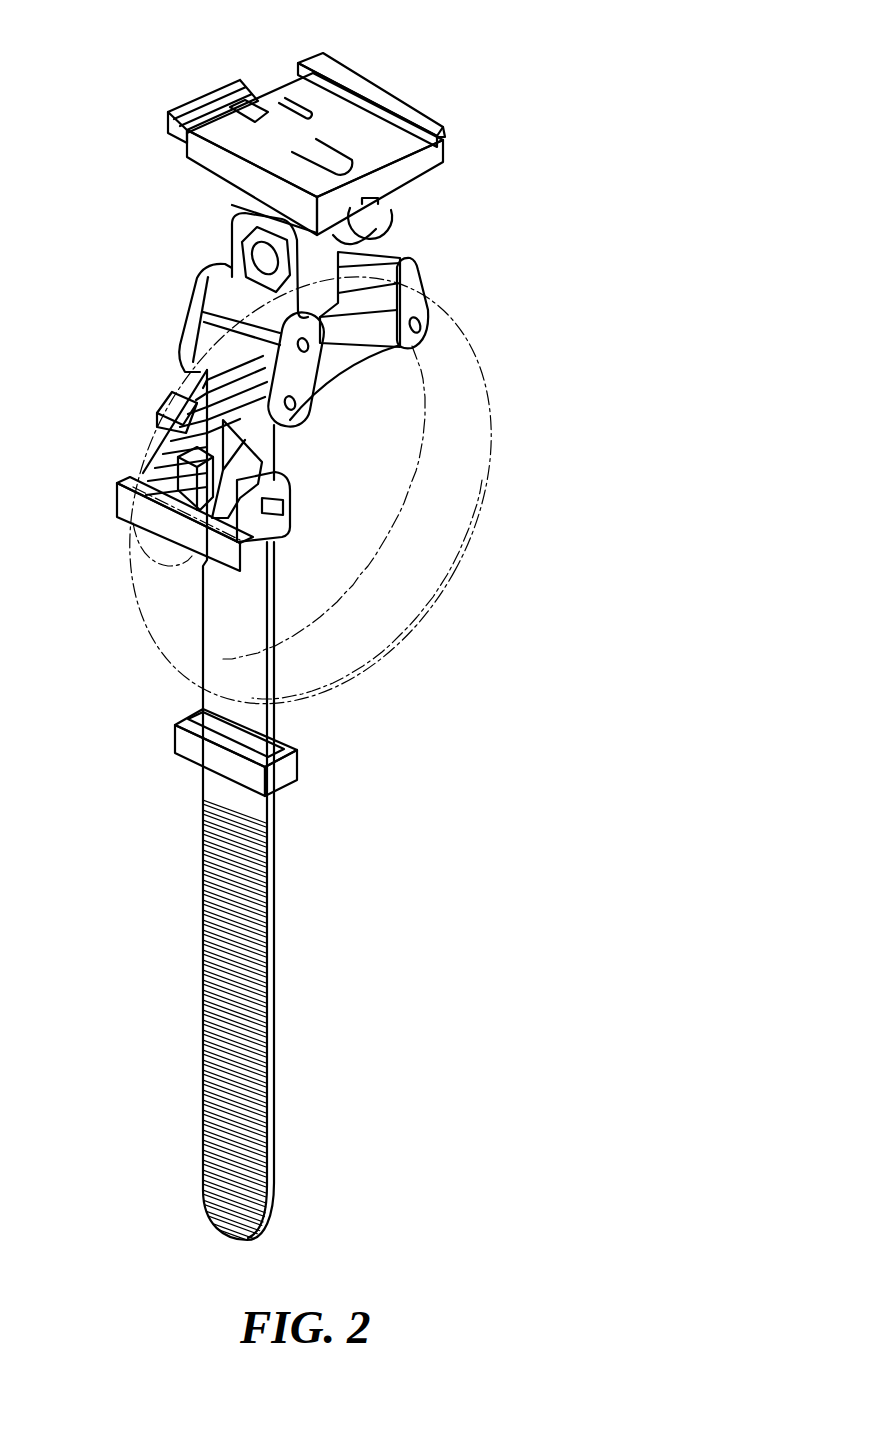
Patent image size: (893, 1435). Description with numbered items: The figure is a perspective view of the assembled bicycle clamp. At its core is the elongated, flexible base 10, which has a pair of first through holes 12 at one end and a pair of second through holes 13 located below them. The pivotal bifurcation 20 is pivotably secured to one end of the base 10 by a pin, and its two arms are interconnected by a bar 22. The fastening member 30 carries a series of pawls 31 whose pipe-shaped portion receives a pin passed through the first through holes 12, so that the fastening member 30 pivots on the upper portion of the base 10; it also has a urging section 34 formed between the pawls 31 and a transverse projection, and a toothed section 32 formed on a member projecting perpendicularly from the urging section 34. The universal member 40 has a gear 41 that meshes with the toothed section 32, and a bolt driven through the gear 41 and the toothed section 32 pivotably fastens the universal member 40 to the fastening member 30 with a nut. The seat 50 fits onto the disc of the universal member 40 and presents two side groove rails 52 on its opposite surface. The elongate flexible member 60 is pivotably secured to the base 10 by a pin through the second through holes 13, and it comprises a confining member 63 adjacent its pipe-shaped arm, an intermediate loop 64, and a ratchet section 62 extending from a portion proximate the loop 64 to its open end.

The base 10 is at (342, 373).
The first through holes 12 is at (305, 352).
The second through holes 13 is at (290, 410).
The pivotal bifurcation 20 is at (428, 287).
The bar 22 is at (388, 254).
The fastening member 30 is at (228, 243).
The pawls 31 is at (207, 343).
The toothed section 32 is at (248, 205).
The urging section 34 is at (363, 323).
The universal member 40 is at (386, 229).
The gear 41 is at (380, 240).
The seat 50 is at (386, 80).
The side groove rails 52 is at (443, 147).
The flexible member 60 is at (290, 633).
The ratchet section 62 is at (203, 855).
The confining member 63 is at (192, 360).
The intermediate loop 64 is at (175, 737).